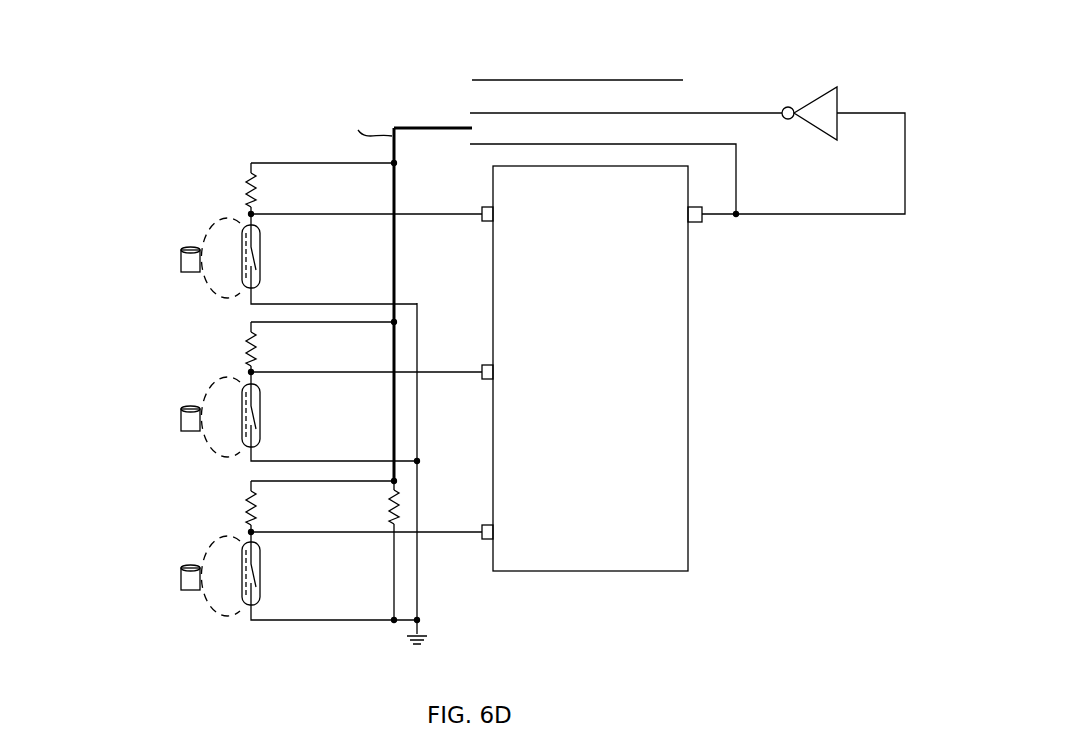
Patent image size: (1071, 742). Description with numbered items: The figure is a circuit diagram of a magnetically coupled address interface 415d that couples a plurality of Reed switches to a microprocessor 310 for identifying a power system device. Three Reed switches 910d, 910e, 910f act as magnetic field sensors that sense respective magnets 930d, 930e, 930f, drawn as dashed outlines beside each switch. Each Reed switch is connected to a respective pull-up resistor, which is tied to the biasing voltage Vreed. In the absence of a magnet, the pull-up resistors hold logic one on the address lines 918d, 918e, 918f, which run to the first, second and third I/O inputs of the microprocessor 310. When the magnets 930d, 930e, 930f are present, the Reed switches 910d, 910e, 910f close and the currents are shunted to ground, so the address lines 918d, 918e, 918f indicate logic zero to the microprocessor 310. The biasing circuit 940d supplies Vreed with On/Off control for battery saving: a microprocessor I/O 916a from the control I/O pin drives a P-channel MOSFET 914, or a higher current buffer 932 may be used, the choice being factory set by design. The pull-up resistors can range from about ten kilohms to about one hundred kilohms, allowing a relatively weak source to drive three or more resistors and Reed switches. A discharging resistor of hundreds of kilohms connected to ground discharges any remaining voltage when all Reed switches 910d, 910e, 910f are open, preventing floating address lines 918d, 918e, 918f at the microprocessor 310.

The magnetically coupled address interface 415d is at (100, 129).
The biasing circuit 940d is at (490, 63).
The P-channel MOSFET 914 is at (577, 70).
The higher current buffer 932 is at (687, 133).
The microprocessor I/O 916a is at (603, 169).
The address line 918d is at (451, 198).
The address line 918e is at (451, 356).
The address line 918f is at (452, 516).
The Reed switch 910d is at (279, 256).
The Reed switch 910e is at (278, 415).
The Reed switch 910f is at (276, 573).
The magnet 930d is at (180, 258).
The magnet 930e is at (180, 417).
The magnet 930f is at (180, 576).
The microprocessor 310 is at (689, 463).